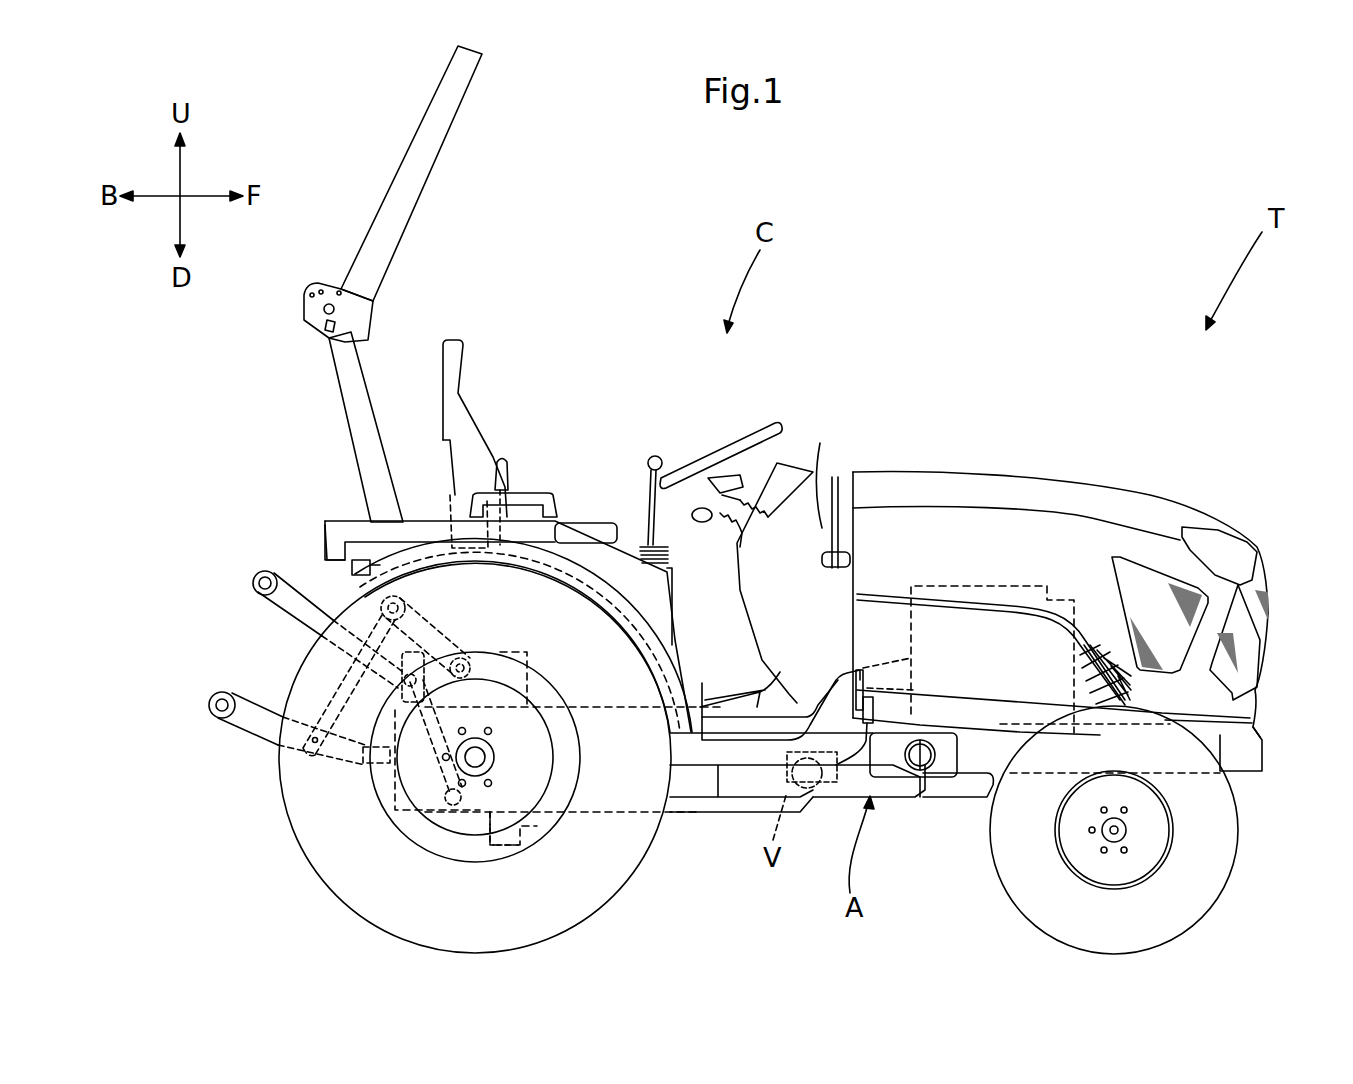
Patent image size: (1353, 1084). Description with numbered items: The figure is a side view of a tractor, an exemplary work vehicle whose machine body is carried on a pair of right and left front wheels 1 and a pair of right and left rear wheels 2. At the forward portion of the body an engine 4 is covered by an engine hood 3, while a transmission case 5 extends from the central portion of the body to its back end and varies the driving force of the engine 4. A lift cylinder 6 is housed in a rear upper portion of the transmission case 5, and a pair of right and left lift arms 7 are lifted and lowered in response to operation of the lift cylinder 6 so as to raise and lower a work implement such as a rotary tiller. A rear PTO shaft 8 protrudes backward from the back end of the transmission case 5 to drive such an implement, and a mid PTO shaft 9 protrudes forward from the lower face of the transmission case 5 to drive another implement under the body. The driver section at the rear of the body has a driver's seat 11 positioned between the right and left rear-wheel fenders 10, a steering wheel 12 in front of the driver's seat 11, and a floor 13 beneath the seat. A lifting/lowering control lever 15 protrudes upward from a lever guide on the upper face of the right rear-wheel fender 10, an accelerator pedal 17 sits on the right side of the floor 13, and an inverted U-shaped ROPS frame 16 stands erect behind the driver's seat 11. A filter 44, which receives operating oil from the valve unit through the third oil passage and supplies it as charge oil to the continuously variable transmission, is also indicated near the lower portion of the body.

The front wheels 1 is at (1230, 846).
The rear wheels 2 is at (331, 871).
The engine hood 3 is at (998, 475).
The engine 4 is at (978, 584).
The transmission case 5 is at (702, 808).
The lift cylinder 6 is at (516, 658).
The lift arms 7 is at (437, 642).
The rear PTO shaft 8 is at (355, 777).
The mid PTO shaft 9 is at (527, 833).
The rear-wheel fenders 10 is at (560, 540).
The driver's seat 11 is at (478, 408).
The steering wheel 12 is at (712, 455).
The floor 13 is at (762, 712).
The lifting/lowering control lever 15 is at (507, 462).
The ROPS frame 16 is at (418, 182).
The accelerator pedal 17 is at (766, 690).
The filter 44 is at (820, 787).